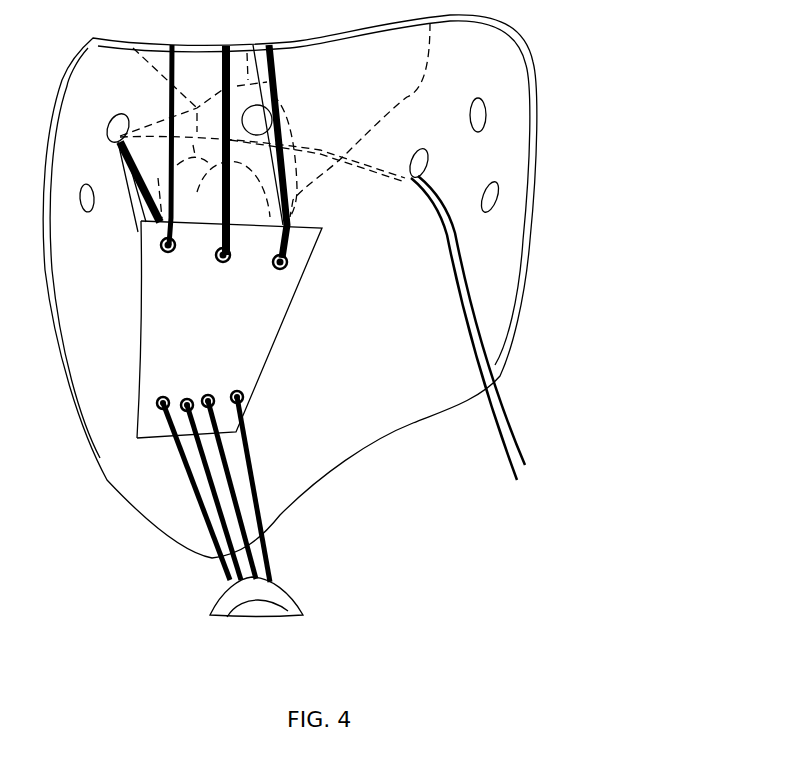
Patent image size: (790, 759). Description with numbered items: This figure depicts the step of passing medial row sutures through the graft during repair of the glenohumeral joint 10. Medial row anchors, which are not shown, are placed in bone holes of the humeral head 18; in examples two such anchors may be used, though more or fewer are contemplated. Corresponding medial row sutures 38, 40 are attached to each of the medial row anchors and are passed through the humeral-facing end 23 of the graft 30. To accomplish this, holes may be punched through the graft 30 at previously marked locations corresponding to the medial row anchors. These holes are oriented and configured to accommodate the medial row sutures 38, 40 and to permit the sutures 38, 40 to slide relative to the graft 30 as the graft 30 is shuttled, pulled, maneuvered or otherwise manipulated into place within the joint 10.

The glenohumeral joint 10 is at (662, 66).
The humeral head 18 is at (297, 593).
The humeral-facing end 23 is at (150, 424).
The graft 30 is at (208, 329).
The medial row suture 38 is at (218, 531).
The medial row suture 40 is at (267, 540).